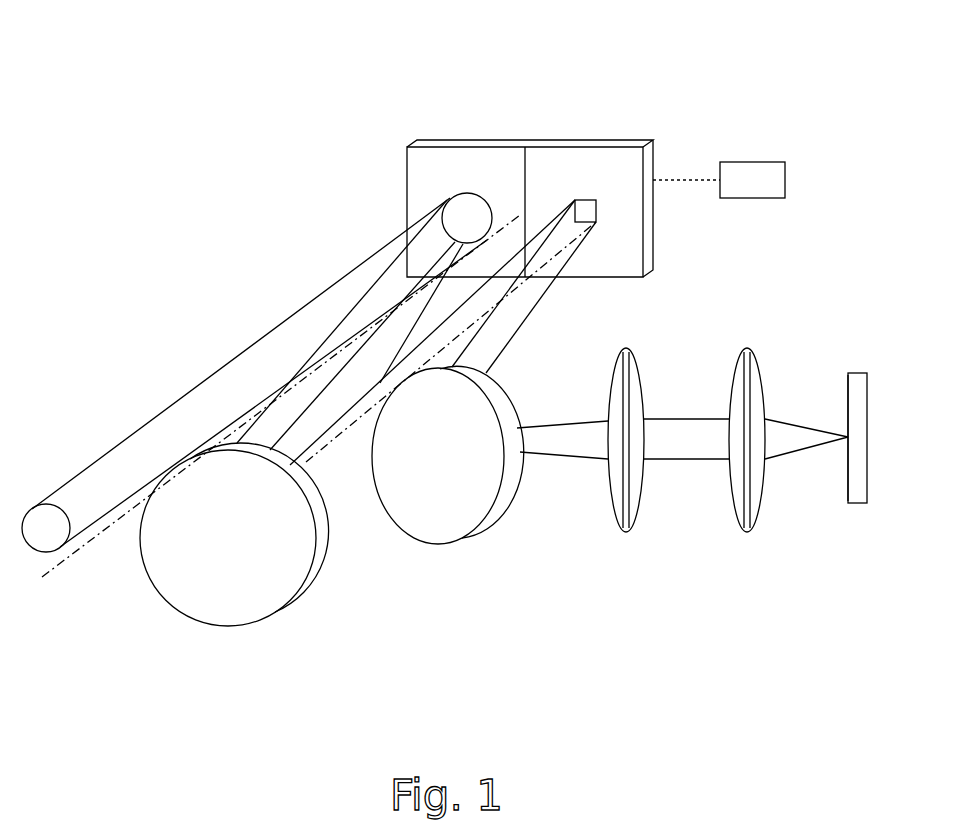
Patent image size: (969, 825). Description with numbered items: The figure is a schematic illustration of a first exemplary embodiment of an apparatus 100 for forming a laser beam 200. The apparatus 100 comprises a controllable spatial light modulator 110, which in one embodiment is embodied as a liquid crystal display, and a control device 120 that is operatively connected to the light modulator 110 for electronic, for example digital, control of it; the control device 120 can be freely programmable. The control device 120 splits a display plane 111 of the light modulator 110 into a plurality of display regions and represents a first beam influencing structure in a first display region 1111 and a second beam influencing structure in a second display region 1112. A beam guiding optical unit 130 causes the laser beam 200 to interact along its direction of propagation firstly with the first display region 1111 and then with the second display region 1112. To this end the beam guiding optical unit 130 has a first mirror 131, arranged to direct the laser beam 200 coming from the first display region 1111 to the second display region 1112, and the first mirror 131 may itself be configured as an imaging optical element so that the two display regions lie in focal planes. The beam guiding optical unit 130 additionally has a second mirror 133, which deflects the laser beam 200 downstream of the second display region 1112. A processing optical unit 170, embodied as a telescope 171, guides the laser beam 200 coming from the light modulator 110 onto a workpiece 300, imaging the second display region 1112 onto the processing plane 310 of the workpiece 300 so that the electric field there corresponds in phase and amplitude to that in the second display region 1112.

The apparatus 100 is at (286, 57).
The spatial light modulator 110 is at (649, 98).
The display plane 111 is at (407, 170).
The first display region 1111 is at (477, 160).
The second display region 1112 is at (579, 160).
The control device 120 is at (785, 180).
The laser beam 200 is at (240, 348).
The beam guiding optical unit 130 is at (380, 566).
The first mirror 131 is at (228, 627).
The second mirror 133 is at (510, 505).
The processing optical unit 170 is at (698, 540).
The telescope 171 is at (762, 342).
The workpiece 300 is at (858, 503).
The processing plane 310 is at (847, 384).